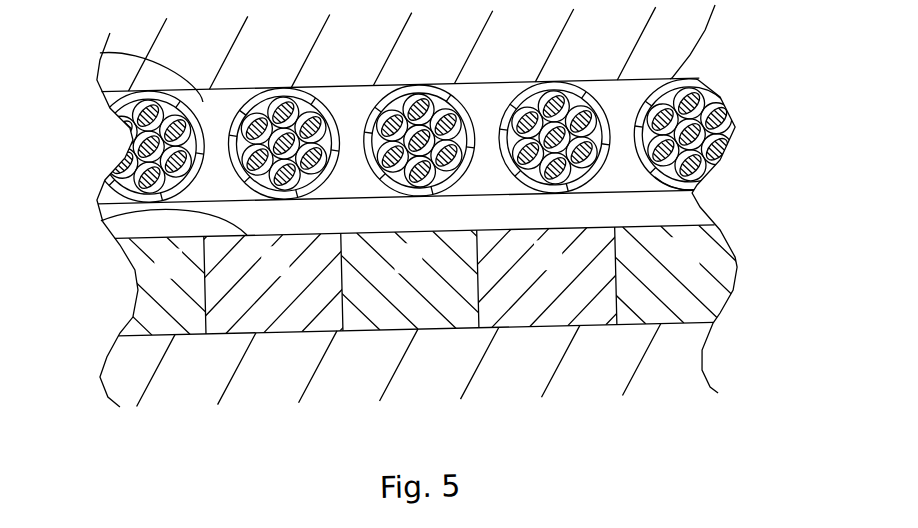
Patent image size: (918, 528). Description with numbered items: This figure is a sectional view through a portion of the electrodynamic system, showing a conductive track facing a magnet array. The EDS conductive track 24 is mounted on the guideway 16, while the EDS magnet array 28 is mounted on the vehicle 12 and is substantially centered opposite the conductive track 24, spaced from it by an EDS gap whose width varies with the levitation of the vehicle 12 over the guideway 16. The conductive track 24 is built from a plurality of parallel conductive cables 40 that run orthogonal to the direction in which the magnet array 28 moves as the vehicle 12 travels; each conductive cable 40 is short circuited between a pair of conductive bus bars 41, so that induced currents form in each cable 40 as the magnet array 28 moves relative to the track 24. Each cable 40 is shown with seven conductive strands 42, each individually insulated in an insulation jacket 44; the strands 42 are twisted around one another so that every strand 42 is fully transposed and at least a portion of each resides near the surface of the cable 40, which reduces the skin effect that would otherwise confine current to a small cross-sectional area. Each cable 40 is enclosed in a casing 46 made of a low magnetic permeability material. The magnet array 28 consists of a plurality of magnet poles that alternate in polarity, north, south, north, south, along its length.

The vehicle 12 is at (448, 376).
The guideway 16 is at (422, 54).
The EDS conductive track 24 is at (719, 237).
The EDS magnet array 28 is at (100, 212).
The conductive cable 40 is at (711, 119).
The conductive bus bar 41 is at (103, 48).
The conductive strand 42 is at (708, 90).
The insulation jacket 44 is at (723, 144).
The casing 46 is at (697, 203).